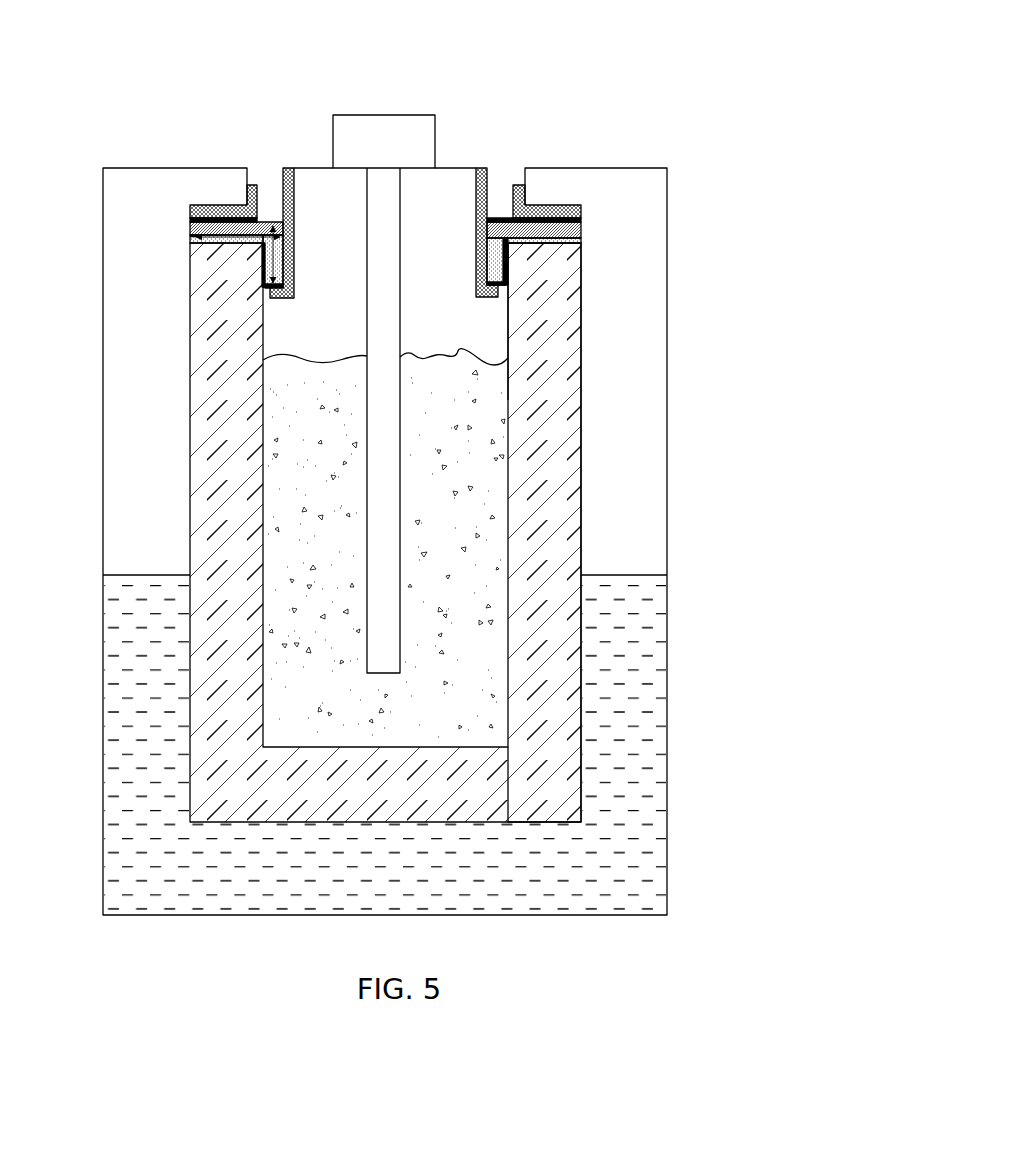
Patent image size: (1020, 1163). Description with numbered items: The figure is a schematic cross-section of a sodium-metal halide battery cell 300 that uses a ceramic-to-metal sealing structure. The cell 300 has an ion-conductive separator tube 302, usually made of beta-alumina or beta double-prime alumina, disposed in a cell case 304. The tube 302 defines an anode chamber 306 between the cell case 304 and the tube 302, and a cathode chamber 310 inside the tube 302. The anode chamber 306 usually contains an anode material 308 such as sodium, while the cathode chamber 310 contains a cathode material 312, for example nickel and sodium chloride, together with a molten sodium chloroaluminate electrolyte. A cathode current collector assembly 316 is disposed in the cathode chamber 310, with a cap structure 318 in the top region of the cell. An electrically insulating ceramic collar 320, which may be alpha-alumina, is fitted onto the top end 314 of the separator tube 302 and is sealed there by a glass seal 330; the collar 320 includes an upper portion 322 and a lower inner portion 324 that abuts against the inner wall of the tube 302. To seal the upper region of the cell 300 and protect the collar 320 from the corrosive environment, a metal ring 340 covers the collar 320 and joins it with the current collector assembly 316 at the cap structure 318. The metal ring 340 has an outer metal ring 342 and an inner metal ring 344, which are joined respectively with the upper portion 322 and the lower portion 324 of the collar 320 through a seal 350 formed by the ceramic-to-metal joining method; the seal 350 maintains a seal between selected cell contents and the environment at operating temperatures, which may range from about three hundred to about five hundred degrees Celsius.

The sodium-metal halide battery cell 300 is at (381, 465).
The ion-conductive separator tube 302 is at (195, 325).
The cell case 304 is at (634, 52).
The anode chamber 306 is at (133, 461).
The anode material 308 is at (128, 765).
The cathode chamber 310 is at (295, 346).
The cathode material 312 is at (456, 358).
The top end of the tube 314 is at (550, 250).
The cathode current collector assembly 316 is at (382, 313).
The cap structure 318 is at (385, 117).
The ceramic collar 320 is at (230, 252).
The upper portion 322 is at (205, 243).
The lower inner portion 324 is at (296, 260).
The glass seal 330 is at (578, 243).
The metal ring 340 is at (258, 203).
The outer metal ring 342 is at (240, 196).
The inner metal ring 344 is at (295, 195).
The seal 350 is at (487, 224).